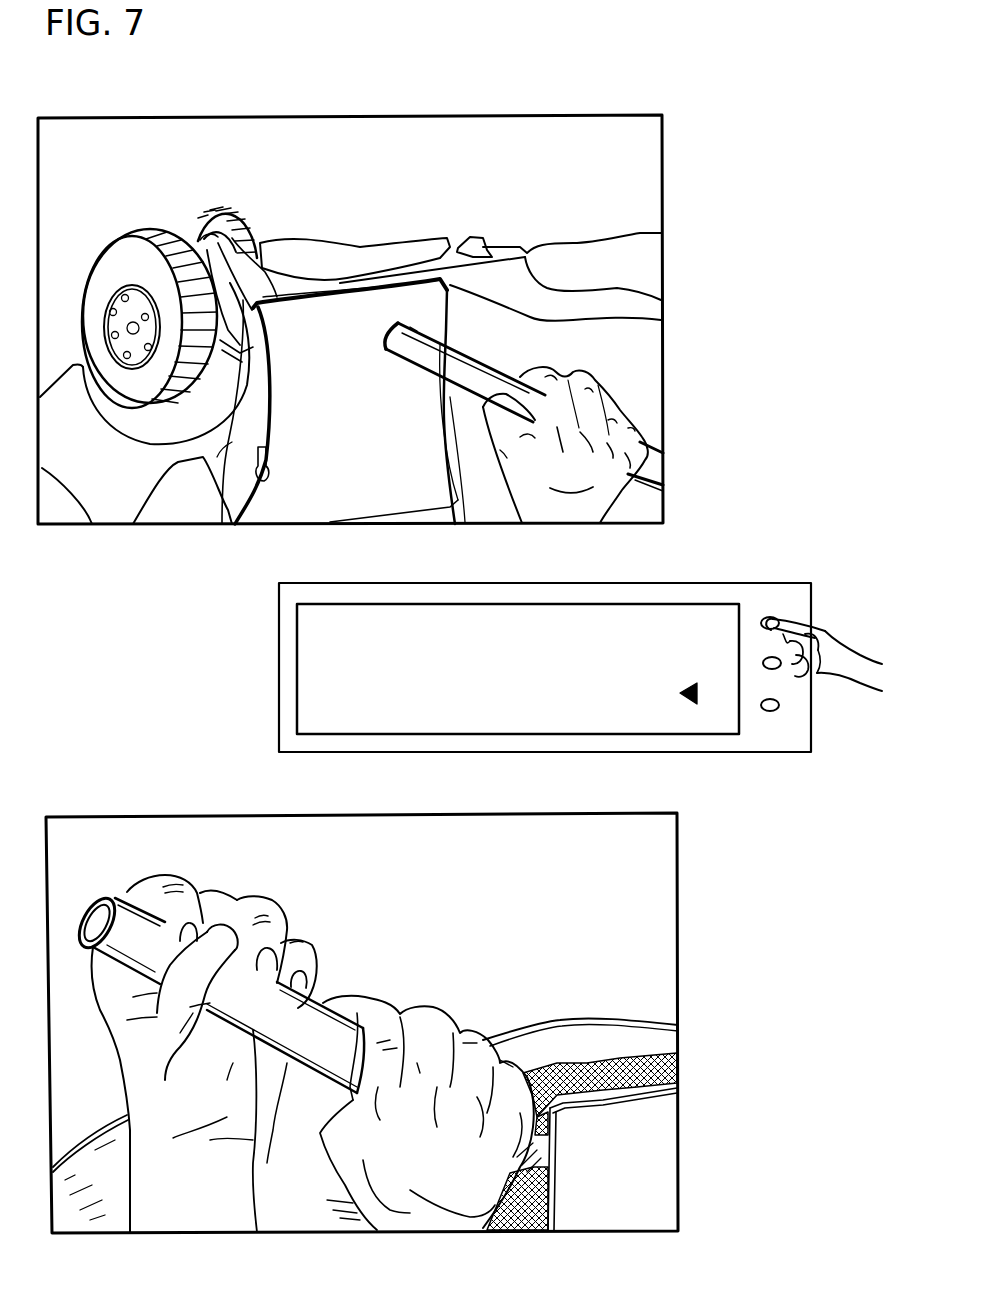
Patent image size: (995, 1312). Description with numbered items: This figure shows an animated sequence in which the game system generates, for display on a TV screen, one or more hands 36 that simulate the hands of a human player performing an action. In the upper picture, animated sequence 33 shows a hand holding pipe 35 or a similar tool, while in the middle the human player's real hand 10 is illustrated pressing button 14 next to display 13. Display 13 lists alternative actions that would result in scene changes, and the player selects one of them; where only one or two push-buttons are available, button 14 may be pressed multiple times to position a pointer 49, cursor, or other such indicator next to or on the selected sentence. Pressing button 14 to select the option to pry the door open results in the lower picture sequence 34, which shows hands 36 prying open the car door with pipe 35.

The animated sequence 33 is at (383, 319).
The picture sequence 34 is at (660, 868).
The pipe 35 is at (413, 353).
The hands 36 is at (548, 508).
The display 13 is at (672, 620).
The button 14 is at (773, 621).
The real hand 10 is at (848, 668).
The pointer 49 is at (697, 704).